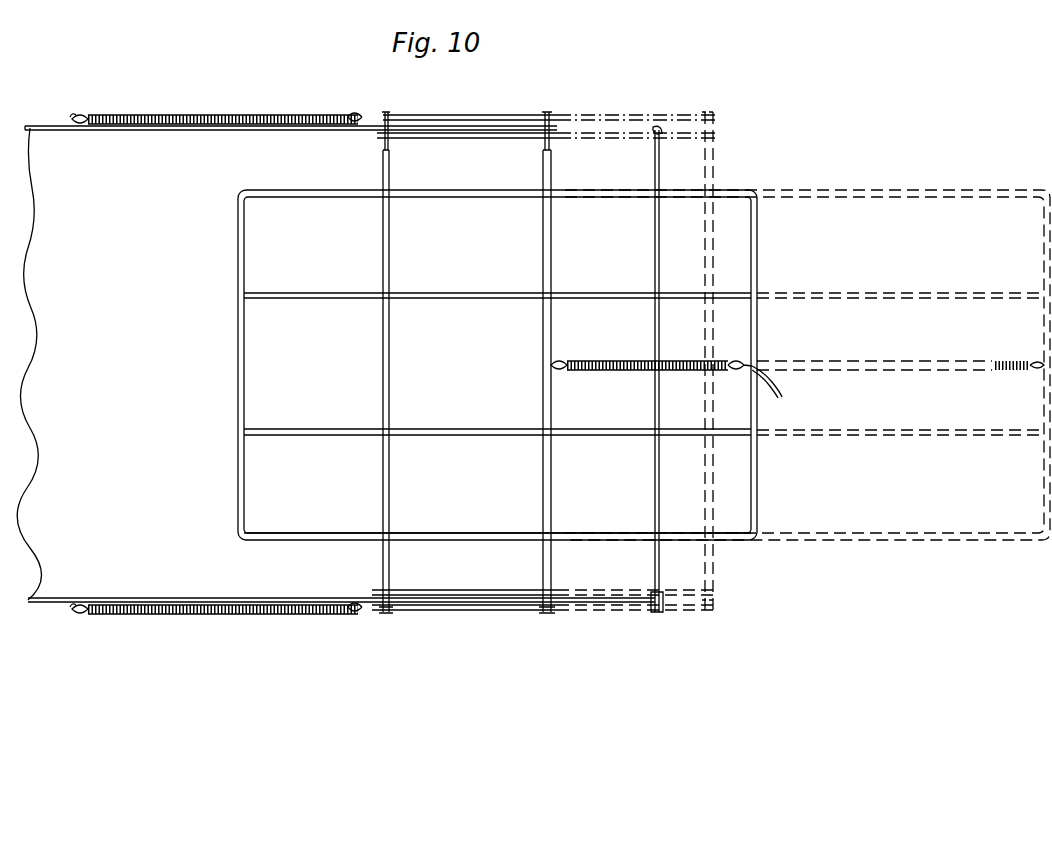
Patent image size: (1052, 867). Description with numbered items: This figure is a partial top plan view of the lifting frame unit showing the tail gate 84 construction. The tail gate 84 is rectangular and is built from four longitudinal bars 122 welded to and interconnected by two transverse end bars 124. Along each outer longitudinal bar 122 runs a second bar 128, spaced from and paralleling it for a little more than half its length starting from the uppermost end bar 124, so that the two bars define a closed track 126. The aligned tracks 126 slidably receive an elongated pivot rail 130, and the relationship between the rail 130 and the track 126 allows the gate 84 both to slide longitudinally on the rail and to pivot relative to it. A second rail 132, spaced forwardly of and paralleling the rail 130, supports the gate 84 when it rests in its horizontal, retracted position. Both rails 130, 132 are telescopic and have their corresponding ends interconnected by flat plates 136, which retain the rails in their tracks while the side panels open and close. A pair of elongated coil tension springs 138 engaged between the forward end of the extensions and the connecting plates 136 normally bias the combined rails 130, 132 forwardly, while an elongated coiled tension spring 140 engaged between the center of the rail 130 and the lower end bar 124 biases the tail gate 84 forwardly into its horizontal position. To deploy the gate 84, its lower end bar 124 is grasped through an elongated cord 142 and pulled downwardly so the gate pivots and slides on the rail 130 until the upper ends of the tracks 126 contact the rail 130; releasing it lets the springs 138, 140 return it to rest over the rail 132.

The tail gate 84 is at (232, 333).
The longitudinal bar 122 is at (603, 437).
The transverse end bar 124 is at (754, 260).
The closed track 126 is at (305, 541).
The second bar 128 is at (302, 530).
The pivot rail 130 is at (545, 252).
The second rail 132 is at (390, 352).
The flat plate 136 is at (512, 120).
The coil tension spring 138 is at (248, 115).
The coiled tension spring 140 is at (606, 360).
The cord 142 is at (785, 393).